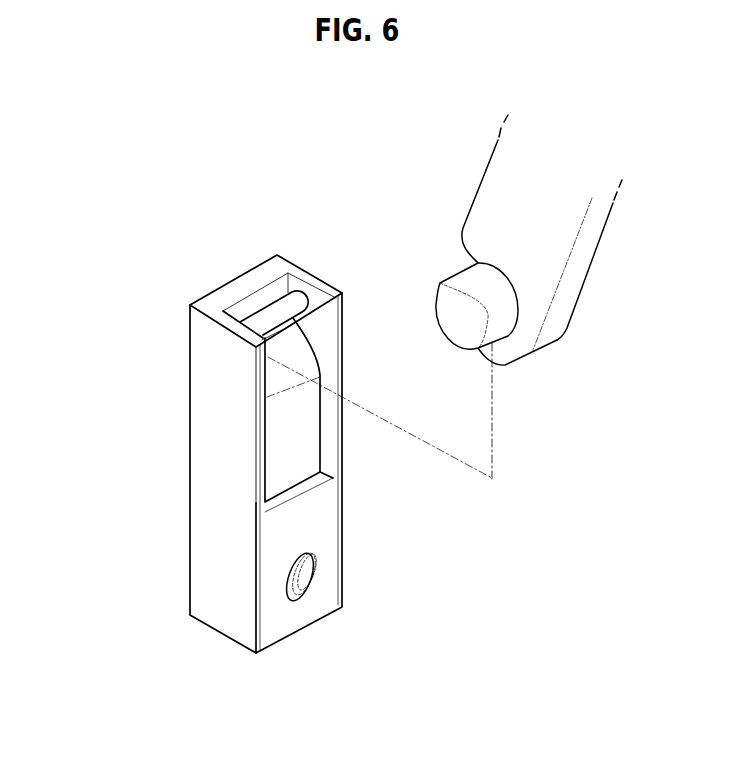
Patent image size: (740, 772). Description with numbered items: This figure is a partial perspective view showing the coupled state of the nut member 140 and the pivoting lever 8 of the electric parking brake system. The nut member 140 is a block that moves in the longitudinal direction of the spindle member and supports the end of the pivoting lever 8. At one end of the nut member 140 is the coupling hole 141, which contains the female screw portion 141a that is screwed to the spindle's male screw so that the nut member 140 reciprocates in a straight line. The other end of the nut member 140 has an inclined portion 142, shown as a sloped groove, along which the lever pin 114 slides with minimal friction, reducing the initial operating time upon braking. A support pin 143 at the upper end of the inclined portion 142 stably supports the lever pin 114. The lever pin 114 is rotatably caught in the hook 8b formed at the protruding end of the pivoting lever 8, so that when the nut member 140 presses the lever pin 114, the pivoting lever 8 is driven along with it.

The nut member 140 is at (159, 411).
The coupling hole 141 is at (300, 596).
The female screw portion 141a is at (296, 590).
The inclined portion 142 is at (295, 347).
The support pin 143 is at (295, 297).
The lever pin 114 is at (447, 293).
The pivoting lever 8 is at (557, 263).
The hook 8b is at (513, 353).